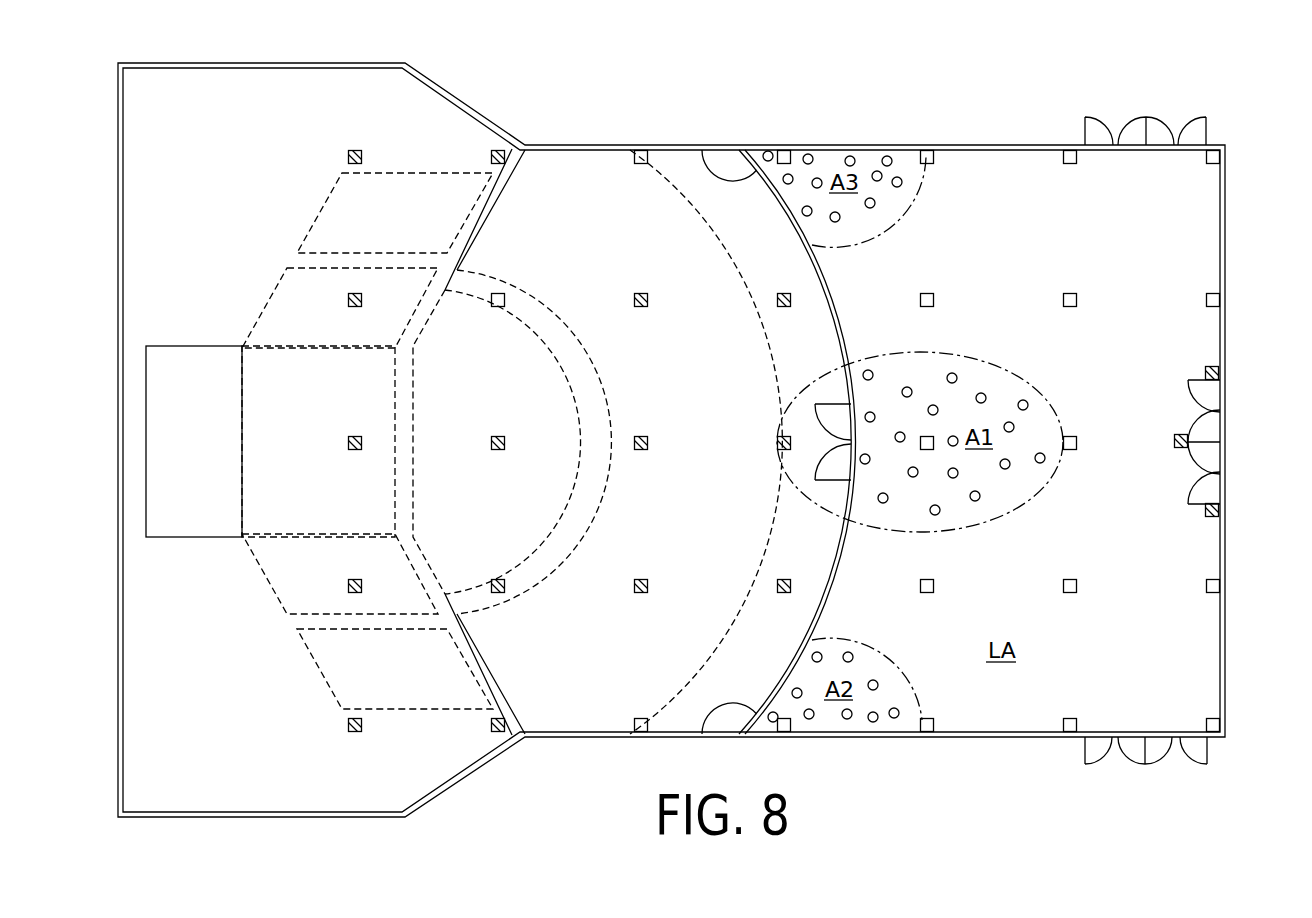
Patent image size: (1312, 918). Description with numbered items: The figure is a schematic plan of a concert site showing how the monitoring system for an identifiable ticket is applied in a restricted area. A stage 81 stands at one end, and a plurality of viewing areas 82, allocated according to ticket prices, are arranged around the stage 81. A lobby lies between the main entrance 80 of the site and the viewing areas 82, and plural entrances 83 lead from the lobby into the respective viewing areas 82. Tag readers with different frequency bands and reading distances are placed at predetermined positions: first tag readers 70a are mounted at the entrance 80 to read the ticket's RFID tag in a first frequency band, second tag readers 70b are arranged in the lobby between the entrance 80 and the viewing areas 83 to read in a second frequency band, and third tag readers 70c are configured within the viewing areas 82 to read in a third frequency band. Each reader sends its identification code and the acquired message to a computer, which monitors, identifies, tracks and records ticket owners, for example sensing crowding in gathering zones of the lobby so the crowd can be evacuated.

The first tag reader 70a is at (1209, 515).
The second tag reader 70b is at (1075, 592).
The third tag reader 70c is at (498, 151).
The entrance 80 is at (1212, 431).
The stage 81 is at (209, 449).
The viewing area 82 is at (438, 711).
The entrance to viewing area 83 is at (843, 425).